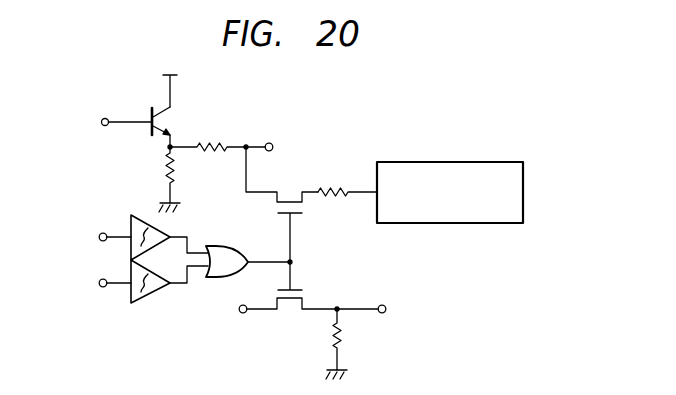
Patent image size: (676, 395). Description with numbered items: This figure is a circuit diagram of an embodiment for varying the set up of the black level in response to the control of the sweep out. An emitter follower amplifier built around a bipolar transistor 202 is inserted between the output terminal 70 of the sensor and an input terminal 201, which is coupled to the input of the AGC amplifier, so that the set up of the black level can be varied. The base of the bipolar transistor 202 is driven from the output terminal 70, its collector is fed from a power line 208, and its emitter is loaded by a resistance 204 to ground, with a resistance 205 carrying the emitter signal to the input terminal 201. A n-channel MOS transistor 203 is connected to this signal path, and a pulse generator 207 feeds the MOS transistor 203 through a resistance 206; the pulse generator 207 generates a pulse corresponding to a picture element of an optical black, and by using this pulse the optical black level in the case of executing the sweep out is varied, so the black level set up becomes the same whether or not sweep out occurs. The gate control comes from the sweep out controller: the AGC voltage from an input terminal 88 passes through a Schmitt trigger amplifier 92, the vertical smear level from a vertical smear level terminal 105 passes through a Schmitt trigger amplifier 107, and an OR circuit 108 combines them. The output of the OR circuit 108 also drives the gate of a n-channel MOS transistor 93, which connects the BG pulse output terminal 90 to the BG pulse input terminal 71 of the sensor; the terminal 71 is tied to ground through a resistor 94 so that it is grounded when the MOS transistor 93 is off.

The power line 208 is at (178, 74).
The bipolar transistor 202 is at (172, 117).
The output terminal of the sensor 70 is at (113, 122).
The resistance 204 is at (155, 178).
The resistance 205 is at (208, 160).
The input terminal 201 is at (276, 150).
The n-channel MOS transistor 203 is at (291, 192).
The resistance 206 is at (347, 205).
The pulse generator 207 is at (449, 160).
The Schmitt trigger amplifier 92 is at (162, 223).
The Schmitt trigger amplifier 107 is at (145, 293).
The input terminal 88 is at (102, 238).
The vertical smear level terminal 105 is at (99, 285).
The OR circuit 108 is at (237, 243).
The n-channel MOS transistor 93 is at (288, 311).
The BG pulse output terminal 90 is at (230, 311).
The resistor 94 is at (346, 343).
The BG pulse input terminal 71 is at (374, 311).